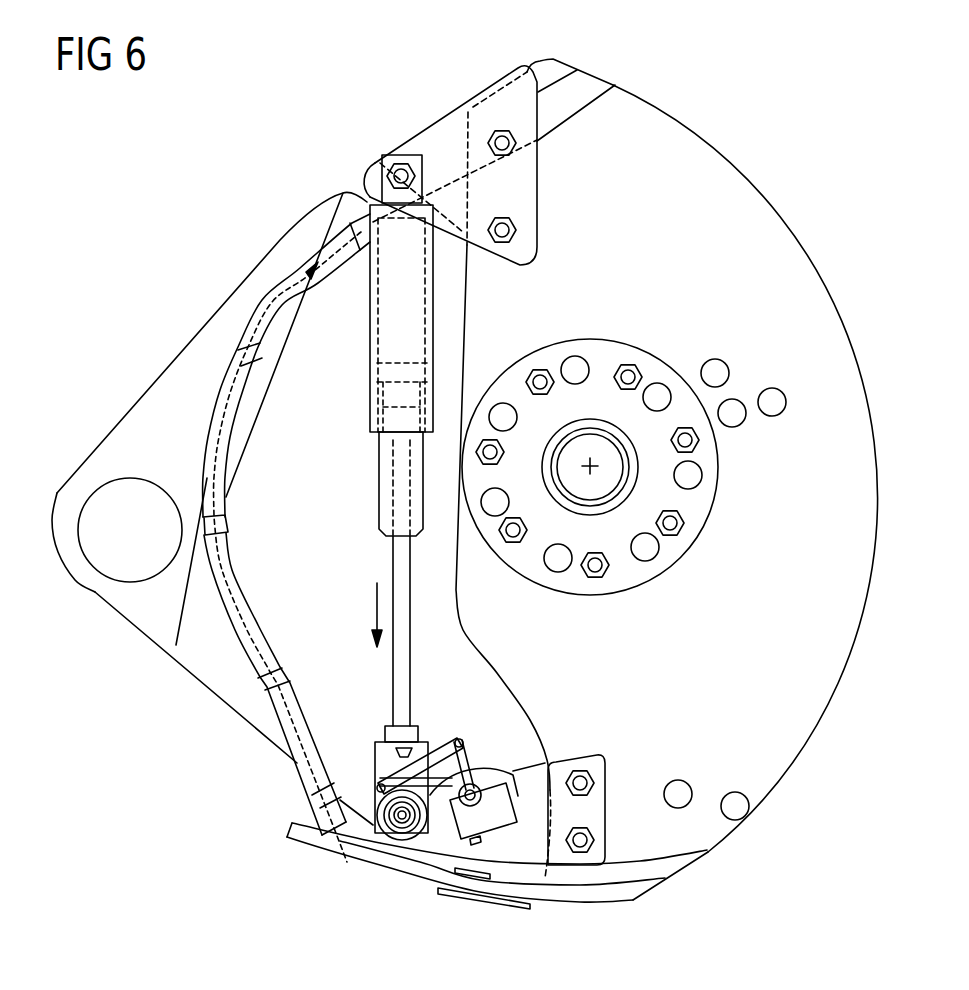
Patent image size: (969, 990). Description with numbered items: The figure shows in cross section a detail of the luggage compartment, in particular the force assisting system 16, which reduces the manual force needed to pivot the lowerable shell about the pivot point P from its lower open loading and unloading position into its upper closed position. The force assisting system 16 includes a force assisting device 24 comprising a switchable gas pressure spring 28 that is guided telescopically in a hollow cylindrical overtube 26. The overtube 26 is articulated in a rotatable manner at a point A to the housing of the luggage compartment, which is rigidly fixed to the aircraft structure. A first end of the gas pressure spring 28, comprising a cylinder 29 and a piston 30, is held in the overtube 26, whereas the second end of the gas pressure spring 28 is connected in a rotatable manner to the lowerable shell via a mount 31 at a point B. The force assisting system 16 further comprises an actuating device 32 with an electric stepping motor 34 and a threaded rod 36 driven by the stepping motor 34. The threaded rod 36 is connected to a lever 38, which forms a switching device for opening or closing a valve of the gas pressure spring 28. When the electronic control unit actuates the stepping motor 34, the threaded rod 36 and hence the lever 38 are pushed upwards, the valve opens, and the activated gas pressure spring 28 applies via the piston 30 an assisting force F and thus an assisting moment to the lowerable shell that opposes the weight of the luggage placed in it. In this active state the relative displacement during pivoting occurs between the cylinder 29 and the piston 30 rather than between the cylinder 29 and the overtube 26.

The force assisting system 16 is at (160, 276).
The force assisting device 24 is at (272, 470).
The overtube 26 is at (370, 346).
The gas pressure spring 28 is at (362, 509).
The cylinder 29 is at (384, 470).
The piston 30 is at (398, 661).
The mount 31 is at (378, 795).
The actuating device 32 is at (562, 821).
The electric stepping motor 34 is at (482, 828).
The threaded rod 36 is at (471, 780).
The lever 38 is at (442, 744).
The point A is at (400, 166).
The point B is at (402, 826).
The assisting force F is at (372, 611).
The pivot point P is at (590, 469).